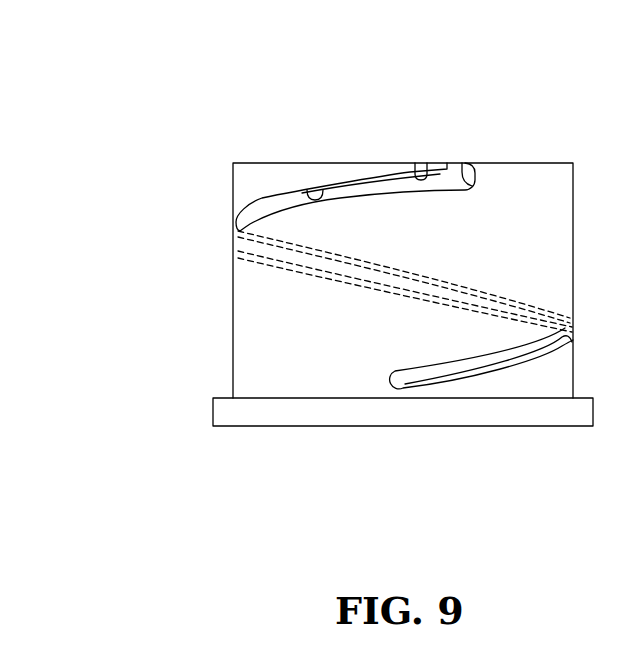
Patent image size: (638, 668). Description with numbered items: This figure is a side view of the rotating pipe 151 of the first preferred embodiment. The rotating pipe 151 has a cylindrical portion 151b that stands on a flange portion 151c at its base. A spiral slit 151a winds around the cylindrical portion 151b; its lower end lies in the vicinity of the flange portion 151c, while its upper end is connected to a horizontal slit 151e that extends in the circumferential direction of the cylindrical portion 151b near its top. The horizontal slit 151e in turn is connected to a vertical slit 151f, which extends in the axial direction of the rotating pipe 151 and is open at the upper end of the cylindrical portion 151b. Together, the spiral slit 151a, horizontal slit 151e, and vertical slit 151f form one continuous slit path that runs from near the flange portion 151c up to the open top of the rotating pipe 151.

The rotating pipe 151 is at (133, 157).
The spiral slit 151a is at (320, 190).
The cylindrical portion 151b is at (247, 322).
The flange portion 151c is at (372, 412).
The horizontal slit 151e is at (426, 172).
The vertical slit 151f is at (462, 165).